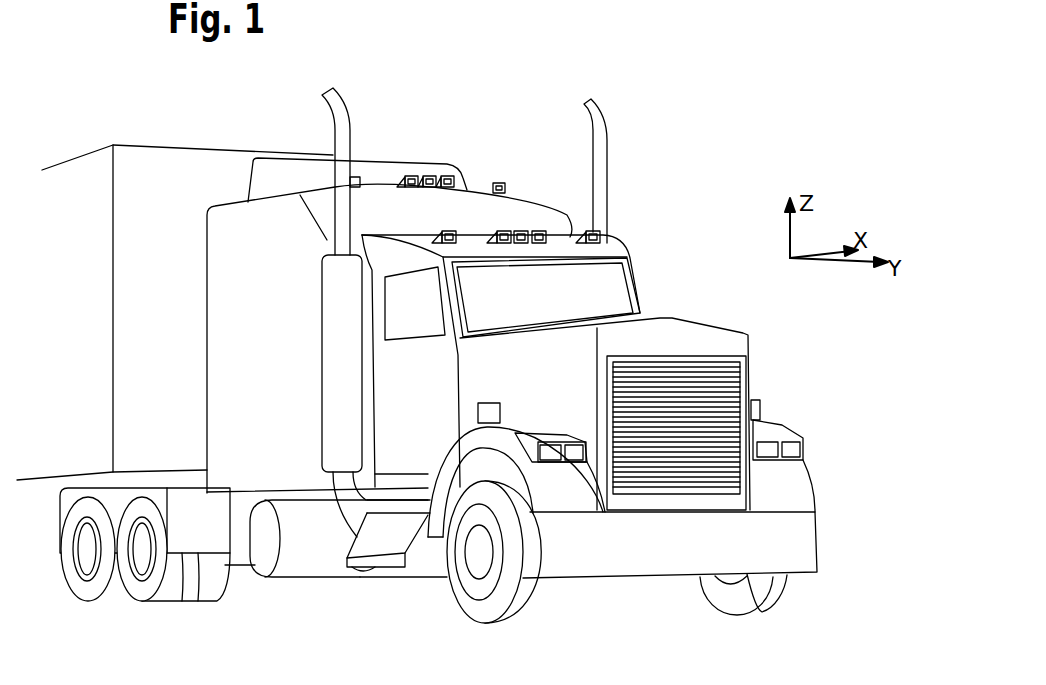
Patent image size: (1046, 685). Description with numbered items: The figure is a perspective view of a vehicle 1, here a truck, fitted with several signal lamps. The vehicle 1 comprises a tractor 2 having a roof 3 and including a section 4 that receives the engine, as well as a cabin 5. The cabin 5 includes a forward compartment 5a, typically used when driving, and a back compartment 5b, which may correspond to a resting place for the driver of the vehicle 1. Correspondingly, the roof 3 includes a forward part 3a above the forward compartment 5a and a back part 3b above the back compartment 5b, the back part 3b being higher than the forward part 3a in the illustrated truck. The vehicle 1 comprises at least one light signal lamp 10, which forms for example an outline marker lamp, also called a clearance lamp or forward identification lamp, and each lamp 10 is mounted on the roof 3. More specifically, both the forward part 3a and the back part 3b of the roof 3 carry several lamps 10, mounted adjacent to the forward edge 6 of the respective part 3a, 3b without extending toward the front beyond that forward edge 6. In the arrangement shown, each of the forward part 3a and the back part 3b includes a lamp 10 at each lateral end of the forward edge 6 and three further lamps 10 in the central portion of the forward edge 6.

The vehicle 1 is at (708, 152).
The tractor 2 is at (840, 515).
The roof 3 is at (410, 295).
The forward part 3a is at (473, 230).
The back part 3b is at (277, 197).
The section 4 is at (578, 390).
The cabin 5 is at (336, 535).
The forward compartment 5a is at (413, 457).
The back compartment 5b is at (268, 438).
The forward edge 6 is at (388, 180).
The light signal lamp 10 is at (433, 173).